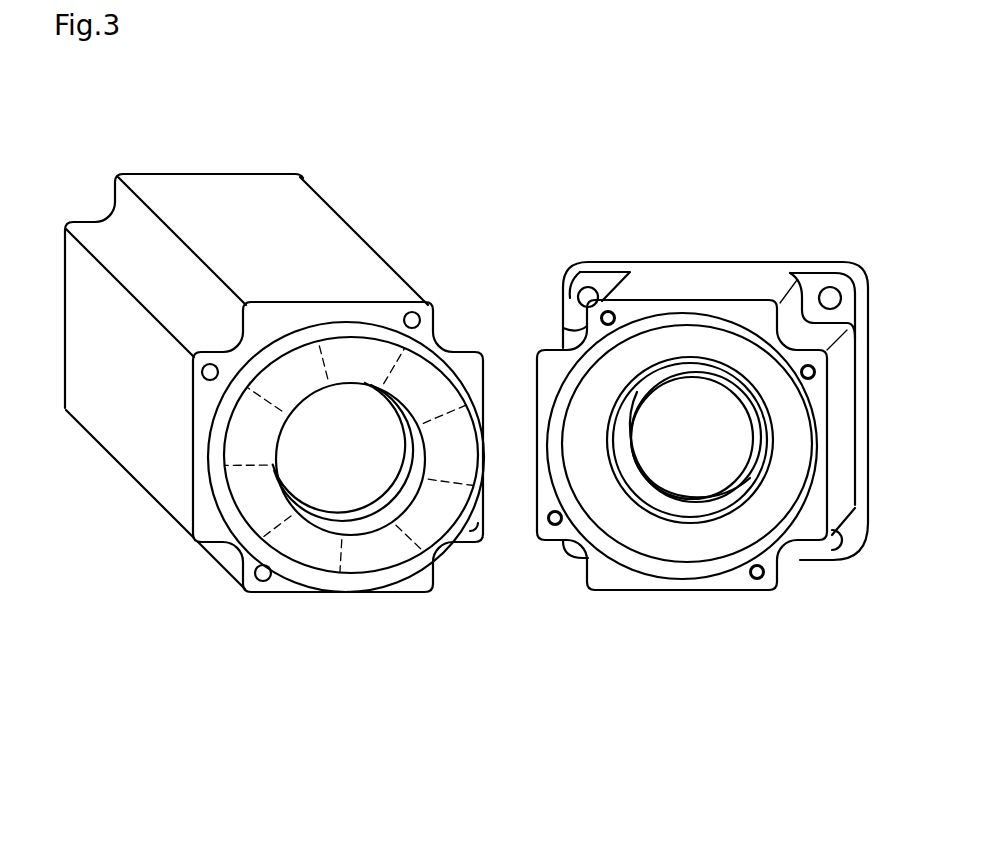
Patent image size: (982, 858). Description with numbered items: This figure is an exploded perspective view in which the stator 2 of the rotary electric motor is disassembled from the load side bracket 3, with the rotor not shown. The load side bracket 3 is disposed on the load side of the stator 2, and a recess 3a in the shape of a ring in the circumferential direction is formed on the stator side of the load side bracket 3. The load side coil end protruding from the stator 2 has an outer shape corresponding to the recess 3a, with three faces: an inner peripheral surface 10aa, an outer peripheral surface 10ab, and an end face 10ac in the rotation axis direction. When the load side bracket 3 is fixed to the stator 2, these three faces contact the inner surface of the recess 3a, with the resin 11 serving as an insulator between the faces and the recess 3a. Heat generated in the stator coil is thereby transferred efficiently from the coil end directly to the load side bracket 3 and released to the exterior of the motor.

The stator 2 is at (286, 401).
The load side bracket 3 is at (702, 367).
The recess 3a is at (615, 373).
The inner peripheral surface 10aa is at (393, 510).
The outer peripheral surface 10ab is at (322, 332).
The end face 10ac is at (360, 360).
The resin 11 is at (422, 580).